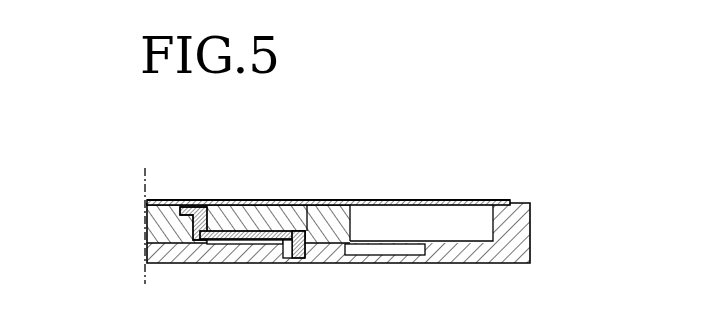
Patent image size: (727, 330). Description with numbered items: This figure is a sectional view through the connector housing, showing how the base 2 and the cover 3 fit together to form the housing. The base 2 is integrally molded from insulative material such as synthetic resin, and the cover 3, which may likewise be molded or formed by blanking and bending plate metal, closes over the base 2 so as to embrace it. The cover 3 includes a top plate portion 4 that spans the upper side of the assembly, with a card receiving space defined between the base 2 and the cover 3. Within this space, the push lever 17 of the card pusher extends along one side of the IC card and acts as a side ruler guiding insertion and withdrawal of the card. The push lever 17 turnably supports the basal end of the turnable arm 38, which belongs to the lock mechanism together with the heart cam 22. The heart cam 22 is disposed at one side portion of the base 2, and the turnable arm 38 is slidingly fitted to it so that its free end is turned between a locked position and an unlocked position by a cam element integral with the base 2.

The base 2 is at (473, 264).
The cover 3 is at (447, 202).
The top plate portion 4 is at (388, 201).
The push lever 17 is at (265, 205).
The heart cam 22 is at (318, 203).
The turnable arm 38 is at (213, 203).